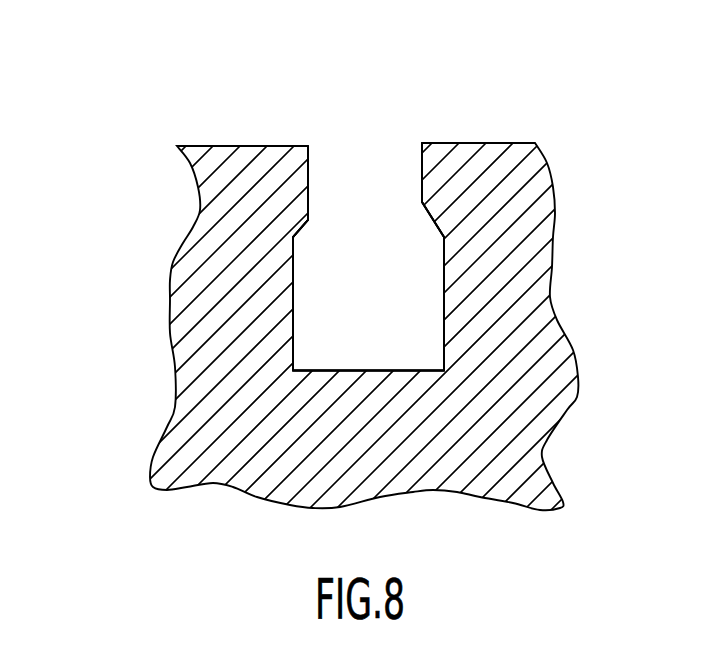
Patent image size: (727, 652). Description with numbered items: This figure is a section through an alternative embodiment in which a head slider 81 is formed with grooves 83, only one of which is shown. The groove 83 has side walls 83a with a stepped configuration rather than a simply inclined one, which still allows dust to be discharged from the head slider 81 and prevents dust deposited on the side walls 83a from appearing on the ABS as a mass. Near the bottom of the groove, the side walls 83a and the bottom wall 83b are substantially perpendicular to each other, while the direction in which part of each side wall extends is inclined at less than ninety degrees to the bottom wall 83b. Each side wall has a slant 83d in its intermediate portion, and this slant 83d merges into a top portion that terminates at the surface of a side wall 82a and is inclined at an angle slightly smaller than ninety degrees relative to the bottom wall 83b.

The head slider 81 is at (468, 143).
The side wall 82a is at (517, 143).
The groove 83 is at (423, 138).
The side wall 83a is at (444, 313).
The bottom wall 83b is at (348, 371).
The slant 83d is at (306, 220).